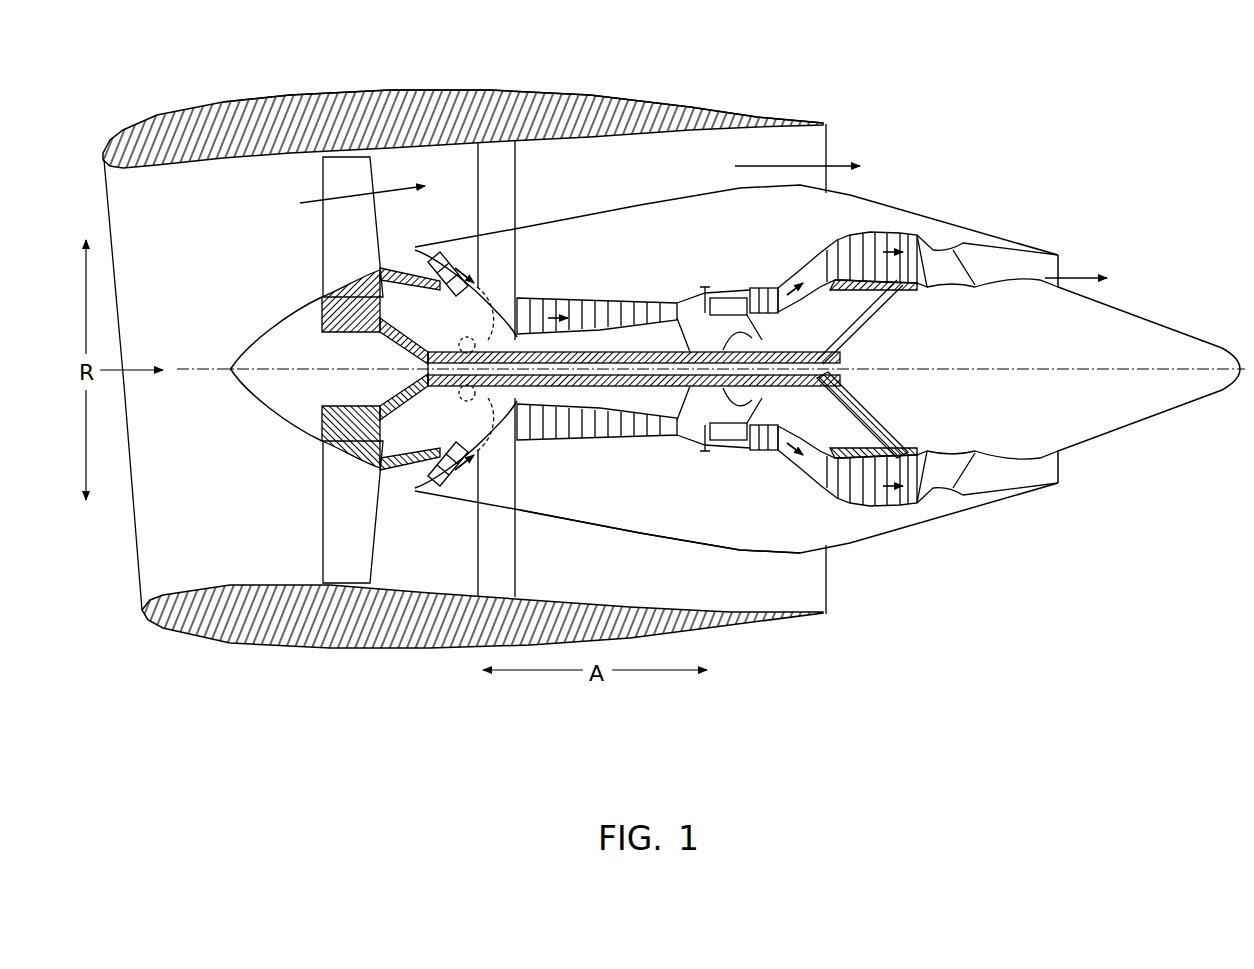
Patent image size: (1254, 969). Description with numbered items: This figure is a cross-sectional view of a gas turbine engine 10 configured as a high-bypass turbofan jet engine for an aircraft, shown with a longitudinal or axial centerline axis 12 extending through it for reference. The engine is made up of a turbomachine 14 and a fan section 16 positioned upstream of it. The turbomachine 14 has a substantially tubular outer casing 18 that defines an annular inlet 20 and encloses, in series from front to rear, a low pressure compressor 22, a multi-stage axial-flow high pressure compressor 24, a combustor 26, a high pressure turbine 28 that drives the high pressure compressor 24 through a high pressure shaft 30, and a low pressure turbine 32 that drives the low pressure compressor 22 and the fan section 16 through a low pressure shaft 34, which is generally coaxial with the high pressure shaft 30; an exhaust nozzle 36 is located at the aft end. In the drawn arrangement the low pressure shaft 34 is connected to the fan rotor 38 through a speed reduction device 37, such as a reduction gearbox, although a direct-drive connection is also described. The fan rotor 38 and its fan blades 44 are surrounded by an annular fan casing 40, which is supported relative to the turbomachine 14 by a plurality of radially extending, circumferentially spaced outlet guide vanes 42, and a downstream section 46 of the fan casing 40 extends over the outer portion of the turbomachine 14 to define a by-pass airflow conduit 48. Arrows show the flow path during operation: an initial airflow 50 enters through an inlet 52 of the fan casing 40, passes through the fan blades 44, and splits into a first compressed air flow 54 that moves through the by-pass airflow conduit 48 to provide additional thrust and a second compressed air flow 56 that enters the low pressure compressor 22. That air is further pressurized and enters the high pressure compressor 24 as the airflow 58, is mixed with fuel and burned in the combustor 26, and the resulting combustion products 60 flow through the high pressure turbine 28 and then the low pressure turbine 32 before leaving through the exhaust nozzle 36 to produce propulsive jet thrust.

The gas turbine engine 10 is at (983, 100).
The axial centerline axis 12 is at (976, 366).
The turbomachine 14 is at (722, 243).
The fan section 16 is at (355, 76).
The outer casing 18 is at (668, 540).
The annular inlet 20 is at (414, 486).
The low pressure compressor 22 is at (482, 440).
The high pressure compressor 24 is at (548, 440).
The combustor 26 is at (722, 445).
The high pressure turbine 28 is at (790, 437).
The high pressure shaft 30 is at (745, 335).
The low pressure turbine 32 is at (905, 505).
The low pressure shaft 34 is at (462, 340).
The exhaust nozzle 36 is at (1060, 262).
The speed reduction device 37 is at (488, 328).
The fan rotor 38 is at (373, 334).
The fan casing 40 is at (400, 650).
The outlet guide vanes 42 is at (522, 166).
The fan blades 44 is at (323, 535).
The downstream section 46 is at (695, 100).
The by-pass airflow conduit 48 is at (637, 178).
The initial airflow 50 is at (138, 365).
The inlet 52 is at (137, 585).
The first compressed air flow 54 is at (340, 194).
The second compressed air flow 56 is at (411, 245).
The airflow entering HP compressor 58 is at (535, 298).
The combustion products 60 is at (765, 287).